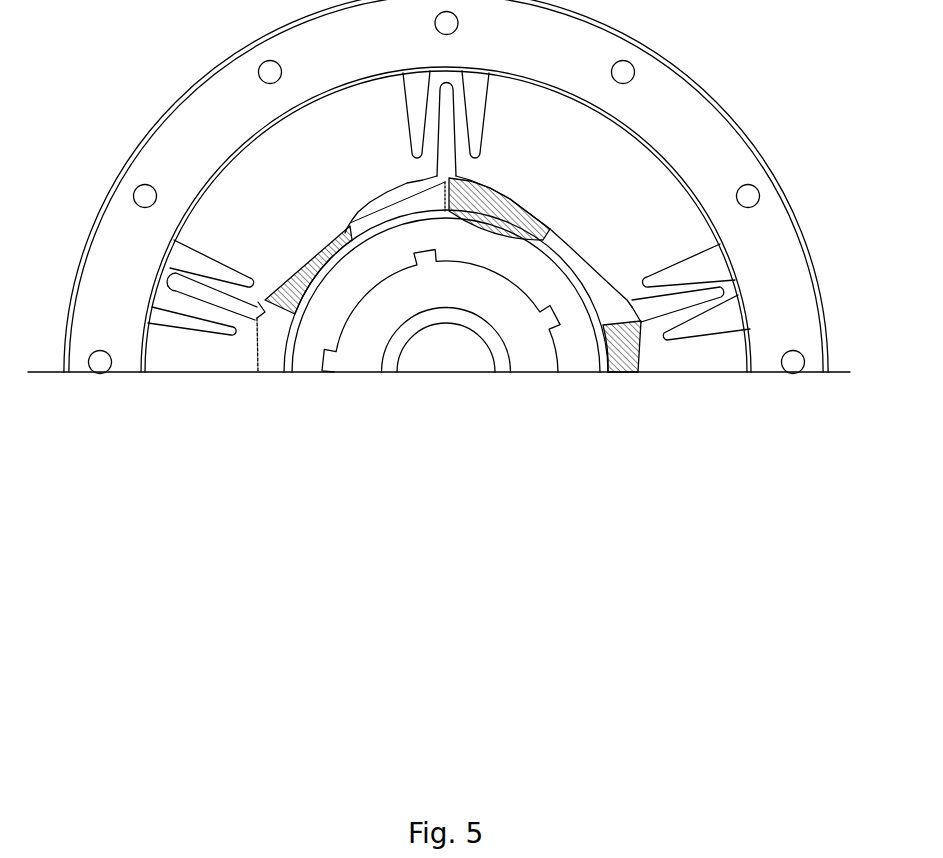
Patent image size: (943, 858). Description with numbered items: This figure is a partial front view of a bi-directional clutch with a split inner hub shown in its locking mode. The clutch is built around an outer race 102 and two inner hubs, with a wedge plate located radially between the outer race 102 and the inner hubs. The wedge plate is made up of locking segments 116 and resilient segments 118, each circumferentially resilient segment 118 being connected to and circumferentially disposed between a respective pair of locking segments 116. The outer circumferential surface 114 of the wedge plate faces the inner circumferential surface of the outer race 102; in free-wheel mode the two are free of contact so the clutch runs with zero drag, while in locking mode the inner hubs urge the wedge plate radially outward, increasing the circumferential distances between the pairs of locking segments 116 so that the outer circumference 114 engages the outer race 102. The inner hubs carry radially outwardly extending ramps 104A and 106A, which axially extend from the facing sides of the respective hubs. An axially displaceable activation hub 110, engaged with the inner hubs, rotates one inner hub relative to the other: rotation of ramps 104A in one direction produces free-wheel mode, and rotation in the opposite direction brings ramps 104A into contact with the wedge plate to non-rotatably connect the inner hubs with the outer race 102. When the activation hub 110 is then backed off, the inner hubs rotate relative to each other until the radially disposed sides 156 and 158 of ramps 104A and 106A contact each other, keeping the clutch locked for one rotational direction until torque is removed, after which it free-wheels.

The outer race 102 is at (777, 252).
The outer circumferential surface of wedge plate 114 is at (677, 168).
The locking segments 116 is at (600, 202).
The resilient segments 118 is at (718, 303).
The activation hub 110 is at (350, 352).
The ramps 104A is at (477, 192).
The ramps 106A is at (420, 196).
The radially disposed side of ramp 156 is at (322, 242).
The radially disposed side of ramp 158 is at (355, 216).